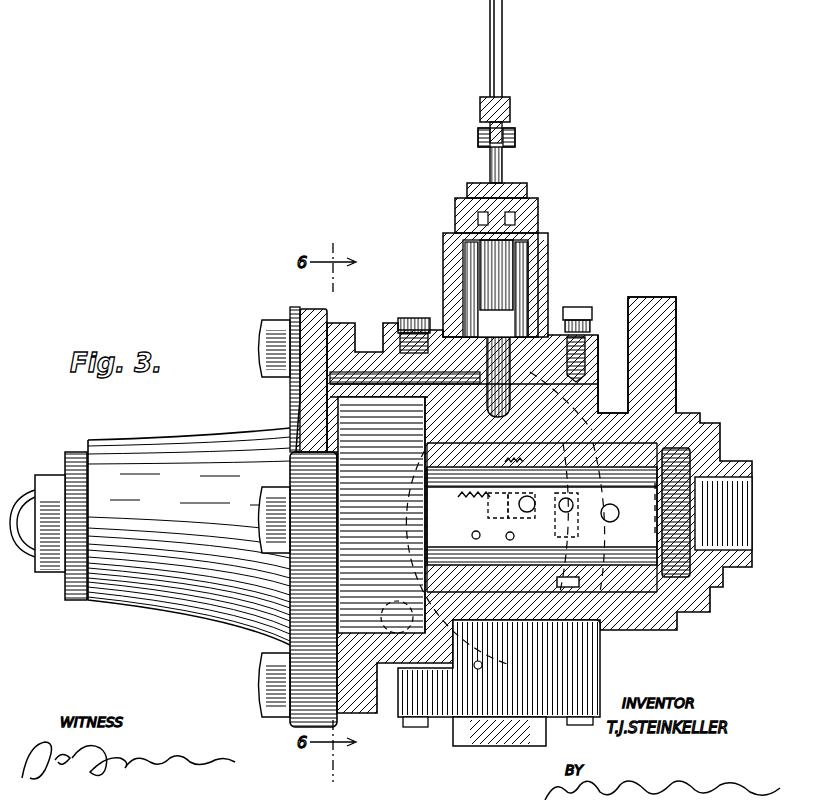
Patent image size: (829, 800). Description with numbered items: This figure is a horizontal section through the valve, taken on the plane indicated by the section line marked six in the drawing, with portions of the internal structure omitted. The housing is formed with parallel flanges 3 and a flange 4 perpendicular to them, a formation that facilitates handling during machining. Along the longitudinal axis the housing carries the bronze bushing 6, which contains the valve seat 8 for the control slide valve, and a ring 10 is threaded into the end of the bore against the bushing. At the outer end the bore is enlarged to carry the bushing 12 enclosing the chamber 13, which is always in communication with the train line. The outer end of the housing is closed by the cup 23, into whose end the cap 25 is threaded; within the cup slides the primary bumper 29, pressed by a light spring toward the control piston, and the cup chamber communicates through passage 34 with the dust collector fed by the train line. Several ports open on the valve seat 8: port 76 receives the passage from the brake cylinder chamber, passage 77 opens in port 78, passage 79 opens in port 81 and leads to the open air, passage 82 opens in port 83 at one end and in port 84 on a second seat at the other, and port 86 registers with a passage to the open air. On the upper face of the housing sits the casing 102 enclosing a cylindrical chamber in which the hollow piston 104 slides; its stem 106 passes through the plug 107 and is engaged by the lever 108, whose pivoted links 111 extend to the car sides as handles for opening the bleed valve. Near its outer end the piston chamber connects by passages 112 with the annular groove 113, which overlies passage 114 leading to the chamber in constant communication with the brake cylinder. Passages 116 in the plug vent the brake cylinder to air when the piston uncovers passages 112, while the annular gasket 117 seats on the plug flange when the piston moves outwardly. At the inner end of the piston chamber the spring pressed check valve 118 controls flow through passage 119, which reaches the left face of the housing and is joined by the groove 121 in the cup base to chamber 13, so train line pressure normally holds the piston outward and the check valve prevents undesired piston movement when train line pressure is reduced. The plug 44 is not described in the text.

The parallel flanges 3 is at (662, 304).
The flange 4 is at (636, 418).
The bronze bushing 6 is at (420, 580).
The valve seat 8 is at (480, 520).
The ring 10 is at (707, 438).
The bushing 12 is at (362, 638).
The chamber 13 is at (380, 501).
The cup 23 is at (202, 454).
The cap 25 is at (50, 490).
The primary bumper 29 is at (342, 523).
The passage 34 is at (524, 461).
The plug 44 is at (497, 741).
The port 76 is at (619, 513).
The passage 77 is at (482, 666).
The port 78 is at (462, 537).
The passage 79 is at (493, 622).
The port 81 is at (499, 536).
The passage 82 is at (460, 501).
The port 83 is at (528, 512).
The port 84 is at (579, 587).
The port 86 is at (573, 505).
The casing 102 is at (443, 236).
The piston 104 is at (538, 276).
The stem 106 is at (503, 165).
The plug 107 is at (470, 183).
The lever 108 is at (511, 113).
The links 111 is at (502, 25).
The passages 112 is at (532, 262).
The annular groove 113 is at (432, 322).
The passage 114 is at (535, 368).
The passages 116 is at (527, 183).
The annular gasket 117 is at (540, 230).
The spring pressed check valve 118 is at (501, 363).
The passage 119 is at (325, 398).
The groove 121 is at (305, 394).